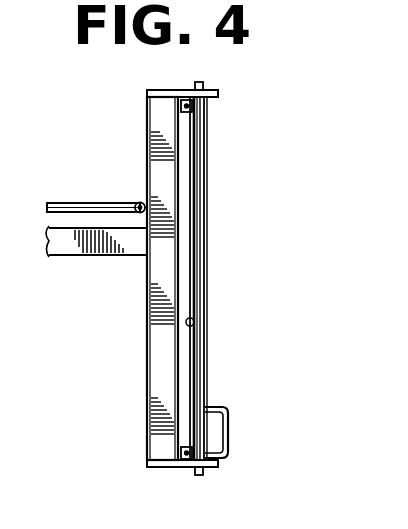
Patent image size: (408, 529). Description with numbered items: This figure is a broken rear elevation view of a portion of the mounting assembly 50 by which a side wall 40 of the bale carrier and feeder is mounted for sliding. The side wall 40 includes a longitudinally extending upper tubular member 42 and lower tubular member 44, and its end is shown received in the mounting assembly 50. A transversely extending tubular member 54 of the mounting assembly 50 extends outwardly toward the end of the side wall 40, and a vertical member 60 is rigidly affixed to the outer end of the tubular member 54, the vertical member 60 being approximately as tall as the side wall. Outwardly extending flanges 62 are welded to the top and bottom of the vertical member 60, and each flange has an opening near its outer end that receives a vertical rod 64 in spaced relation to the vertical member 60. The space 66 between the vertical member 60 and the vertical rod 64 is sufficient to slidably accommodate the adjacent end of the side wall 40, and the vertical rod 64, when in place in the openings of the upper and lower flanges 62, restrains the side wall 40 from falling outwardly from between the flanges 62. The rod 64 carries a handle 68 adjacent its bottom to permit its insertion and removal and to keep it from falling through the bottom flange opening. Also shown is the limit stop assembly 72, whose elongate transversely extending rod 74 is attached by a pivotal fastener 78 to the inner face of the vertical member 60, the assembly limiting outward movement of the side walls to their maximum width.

The side wall 40 is at (192, 292).
The upper tubular member 42 is at (201, 108).
The lower tubular member 44 is at (188, 467).
The mounting assembly 50 is at (53, 257).
The tubular member 54 is at (100, 256).
The vertical member 60 is at (157, 353).
The flange 62 is at (178, 90).
The vertical rod 64 is at (203, 232).
The space 66 is at (195, 322).
The handle 68 is at (228, 438).
The limit stop assembly 72 is at (97, 201).
The rod 74 is at (72, 205).
The pivotal fastener 78 is at (138, 203).